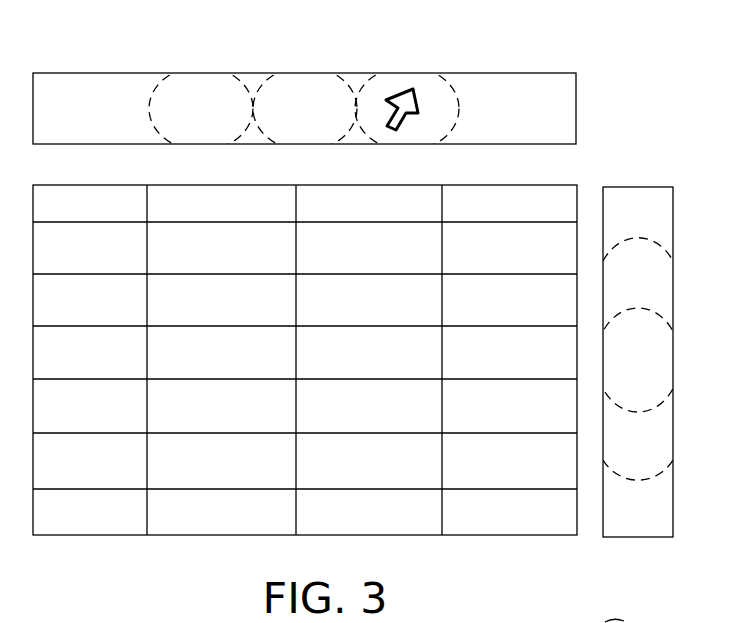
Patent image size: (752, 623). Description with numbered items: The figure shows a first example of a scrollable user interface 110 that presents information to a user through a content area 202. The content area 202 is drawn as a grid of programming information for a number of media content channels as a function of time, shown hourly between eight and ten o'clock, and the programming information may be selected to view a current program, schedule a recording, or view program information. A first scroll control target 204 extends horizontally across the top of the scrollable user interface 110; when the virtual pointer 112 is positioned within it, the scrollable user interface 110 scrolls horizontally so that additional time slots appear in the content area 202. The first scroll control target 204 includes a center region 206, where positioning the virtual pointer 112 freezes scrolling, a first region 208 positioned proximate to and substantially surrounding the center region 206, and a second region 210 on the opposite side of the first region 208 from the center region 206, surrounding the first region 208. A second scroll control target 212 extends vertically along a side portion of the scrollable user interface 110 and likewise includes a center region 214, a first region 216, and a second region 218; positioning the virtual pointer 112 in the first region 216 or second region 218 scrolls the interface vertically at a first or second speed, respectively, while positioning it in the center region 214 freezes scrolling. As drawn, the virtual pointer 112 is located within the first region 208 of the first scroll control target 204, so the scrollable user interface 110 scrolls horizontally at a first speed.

The scrollable user interface 110 is at (598, 38).
The virtual pointer 112 is at (400, 98).
The content area 202 is at (552, 185).
The first scroll control target 204 is at (60, 73).
The center region 206 is at (290, 121).
The first region 208 is at (185, 121).
The second region 210 is at (503, 121).
The second scroll control target 212 is at (656, 187).
The center region 214 is at (623, 381).
The first region 216 is at (623, 294).
The second region 218 is at (623, 227).